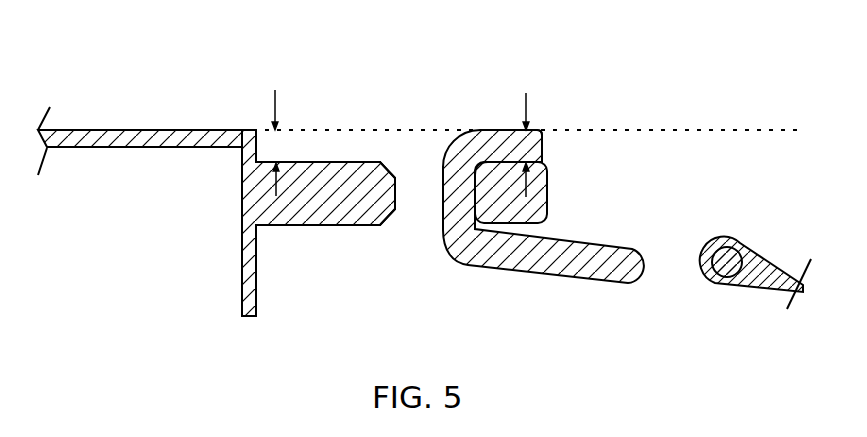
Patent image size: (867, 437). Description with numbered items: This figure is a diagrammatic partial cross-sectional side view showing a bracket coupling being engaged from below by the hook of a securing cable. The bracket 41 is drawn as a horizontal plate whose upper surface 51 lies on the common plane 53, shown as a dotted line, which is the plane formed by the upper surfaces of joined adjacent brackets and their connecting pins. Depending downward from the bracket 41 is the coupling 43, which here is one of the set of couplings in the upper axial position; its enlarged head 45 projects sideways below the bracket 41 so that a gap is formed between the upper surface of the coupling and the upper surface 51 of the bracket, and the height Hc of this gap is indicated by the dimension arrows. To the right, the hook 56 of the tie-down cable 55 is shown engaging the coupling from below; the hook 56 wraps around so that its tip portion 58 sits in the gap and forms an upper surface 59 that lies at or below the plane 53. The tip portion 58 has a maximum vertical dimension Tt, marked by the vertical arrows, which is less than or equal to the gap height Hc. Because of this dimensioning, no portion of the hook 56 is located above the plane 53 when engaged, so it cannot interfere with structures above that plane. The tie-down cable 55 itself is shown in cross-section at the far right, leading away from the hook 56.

The bracket 41 is at (165, 142).
The coupling 43 is at (303, 223).
The block 45 is at (393, 190).
The upper surface of the bracket 51 is at (183, 130).
The common plane 53 is at (638, 130).
The tie-down cable 55 is at (763, 253).
The hook 56 is at (468, 284).
The tip portion 58 is at (542, 130).
The upper surface of the tip portion 59 is at (505, 129).
The height of the gap Hc is at (275, 100).
The maximum vertical dimension of the tip portion Tt is at (527, 93).